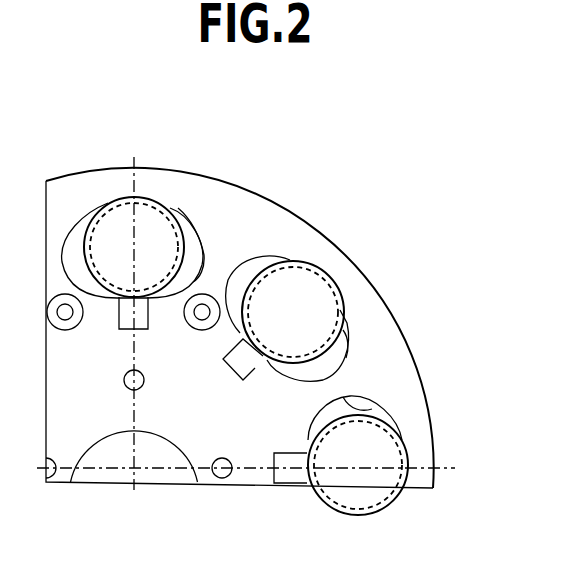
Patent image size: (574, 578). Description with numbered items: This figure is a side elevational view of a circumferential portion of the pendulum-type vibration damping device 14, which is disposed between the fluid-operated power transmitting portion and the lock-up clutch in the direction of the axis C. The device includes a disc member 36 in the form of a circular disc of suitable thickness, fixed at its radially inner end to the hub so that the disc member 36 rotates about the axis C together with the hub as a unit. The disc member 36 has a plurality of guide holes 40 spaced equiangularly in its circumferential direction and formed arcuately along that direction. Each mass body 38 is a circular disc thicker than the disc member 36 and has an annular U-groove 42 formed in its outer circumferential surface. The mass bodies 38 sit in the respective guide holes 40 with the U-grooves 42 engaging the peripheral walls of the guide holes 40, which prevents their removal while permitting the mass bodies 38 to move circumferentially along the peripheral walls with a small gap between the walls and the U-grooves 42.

The vibration damping device 14 is at (340, 206).
The disc member 36 is at (390, 358).
The mass bodies 38 is at (118, 227).
The guide holes 40 is at (193, 228).
The annular U-groove 42 is at (163, 212).
The axis C is at (137, 471).